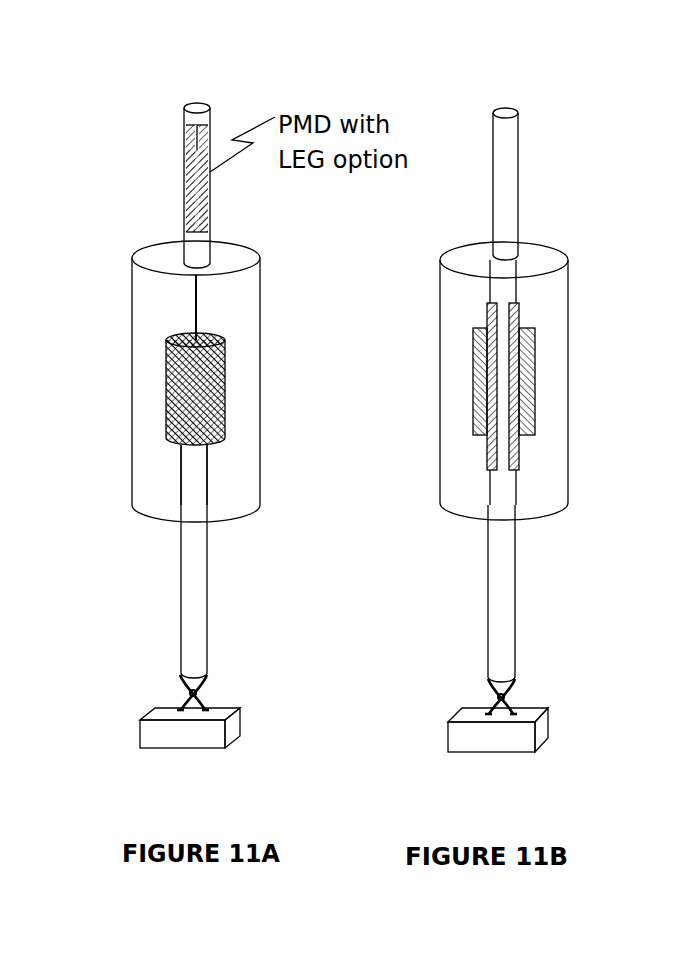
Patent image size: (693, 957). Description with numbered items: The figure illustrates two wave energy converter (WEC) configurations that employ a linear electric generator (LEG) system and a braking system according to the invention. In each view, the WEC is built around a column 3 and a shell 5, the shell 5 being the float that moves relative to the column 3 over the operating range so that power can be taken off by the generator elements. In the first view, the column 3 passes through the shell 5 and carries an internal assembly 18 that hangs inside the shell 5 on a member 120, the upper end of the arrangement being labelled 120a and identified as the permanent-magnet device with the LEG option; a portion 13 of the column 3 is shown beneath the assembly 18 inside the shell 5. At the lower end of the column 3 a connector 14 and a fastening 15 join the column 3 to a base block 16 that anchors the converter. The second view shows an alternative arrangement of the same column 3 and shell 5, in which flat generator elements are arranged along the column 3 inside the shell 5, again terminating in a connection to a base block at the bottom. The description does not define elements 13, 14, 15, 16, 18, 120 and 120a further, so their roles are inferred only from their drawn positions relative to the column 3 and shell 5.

In FIG. 11A, the column 3 is at (146, 390).
In FIG. 11B, the column 3 is at (547, 393).
In FIG. 11A, the shell 5 is at (235, 377).
In FIG. 11B, the shell 5 is at (545, 359).
In FIG. 11A, the rod connection segment 13 is at (125, 488).
In FIG. 11A, the loop connector 14 is at (251, 659).
In FIG. 11A, the knot fastener 15 is at (125, 690).
In FIG. 11A, the weight block 16 is at (143, 755).
In FIG. 11A, the PMD hatched cylinder 18 is at (251, 408).
In FIG. 11A, the wire leg 120 is at (129, 296).
In FIG. 11A, the leg portion in rod 120a is at (257, 138).